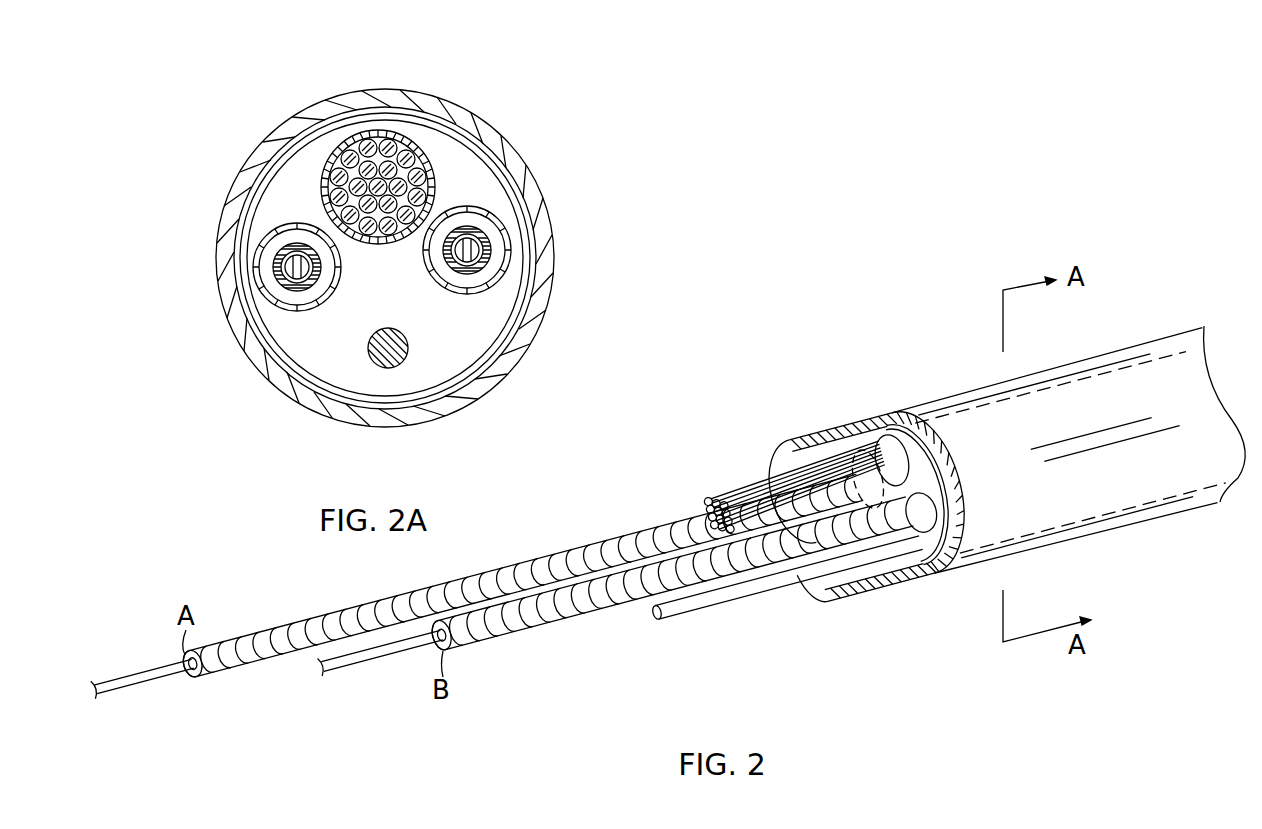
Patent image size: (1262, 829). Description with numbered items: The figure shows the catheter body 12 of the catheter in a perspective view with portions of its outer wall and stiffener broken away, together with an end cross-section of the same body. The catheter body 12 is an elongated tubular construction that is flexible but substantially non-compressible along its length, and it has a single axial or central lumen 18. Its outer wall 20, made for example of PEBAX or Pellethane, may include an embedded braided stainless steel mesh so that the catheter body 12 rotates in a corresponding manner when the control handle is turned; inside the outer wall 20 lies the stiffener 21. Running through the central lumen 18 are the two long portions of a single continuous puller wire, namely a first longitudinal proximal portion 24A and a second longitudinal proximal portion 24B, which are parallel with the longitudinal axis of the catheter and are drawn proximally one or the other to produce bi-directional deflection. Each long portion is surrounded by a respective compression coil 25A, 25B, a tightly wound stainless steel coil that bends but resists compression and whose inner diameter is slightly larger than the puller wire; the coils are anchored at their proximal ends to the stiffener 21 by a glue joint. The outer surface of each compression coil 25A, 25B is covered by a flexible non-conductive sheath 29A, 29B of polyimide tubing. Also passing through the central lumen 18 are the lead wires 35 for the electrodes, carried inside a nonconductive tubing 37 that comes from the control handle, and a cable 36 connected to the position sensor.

In FIG. 2A, the catheter body 12 is at (272, 77).
In FIG. 2, the catheter body 12 is at (1168, 514).
In FIG. 2A, the central lumen 18 is at (298, 348).
In FIG. 2, the central lumen 18 is at (865, 428).
In FIG. 2A, the outer wall 20 is at (232, 190).
In FIG. 2, the outer wall 20 is at (950, 395).
In FIG. 2A, the stiffener 21 is at (263, 158).
In FIG. 2, the stiffener 21 is at (945, 466).
In FIG. 2A, the first longitudinal proximal portion of the puller wire 24A is at (281, 282).
In FIG. 2, the first longitudinal proximal portion of the puller wire 24A is at (141, 688).
In FIG. 2A, the second longitudinal proximal portion of the puller wire 24B is at (489, 257).
In FIG. 2, the second longitudinal proximal portion of the puller wire 24B is at (355, 670).
In FIG. 2A, the first compression coil 25A is at (253, 266).
In FIG. 2, the first compression coil 25A is at (261, 632).
In FIG. 2A, the second compression coil 25B is at (487, 228).
In FIG. 2, the second compression coil 25B is at (503, 640).
In FIG. 2A, the first non-conductive sheath 29A is at (291, 279).
In FIG. 2, the first non-conductive sheath 29A is at (855, 480).
In FIG. 2A, the second non-conductive sheath 29B is at (478, 222).
In FIG. 2, the second non-conductive sheath 29B is at (933, 580).
In FIG. 2A, the lead wires 35 is at (379, 142).
In FIG. 2, the lead wires 35 is at (746, 497).
In FIG. 2A, the cable 36 is at (389, 369).
In FIG. 2, the cable 36 is at (715, 608).
In FIG. 2A, the nonconductive tubing 37 is at (418, 148).
In FIG. 2, the nonconductive tubing 37 is at (1168, 372).